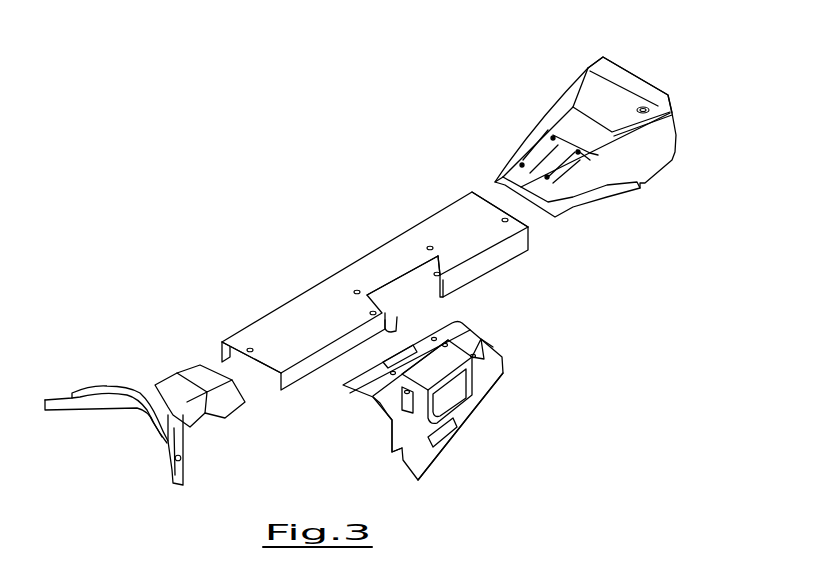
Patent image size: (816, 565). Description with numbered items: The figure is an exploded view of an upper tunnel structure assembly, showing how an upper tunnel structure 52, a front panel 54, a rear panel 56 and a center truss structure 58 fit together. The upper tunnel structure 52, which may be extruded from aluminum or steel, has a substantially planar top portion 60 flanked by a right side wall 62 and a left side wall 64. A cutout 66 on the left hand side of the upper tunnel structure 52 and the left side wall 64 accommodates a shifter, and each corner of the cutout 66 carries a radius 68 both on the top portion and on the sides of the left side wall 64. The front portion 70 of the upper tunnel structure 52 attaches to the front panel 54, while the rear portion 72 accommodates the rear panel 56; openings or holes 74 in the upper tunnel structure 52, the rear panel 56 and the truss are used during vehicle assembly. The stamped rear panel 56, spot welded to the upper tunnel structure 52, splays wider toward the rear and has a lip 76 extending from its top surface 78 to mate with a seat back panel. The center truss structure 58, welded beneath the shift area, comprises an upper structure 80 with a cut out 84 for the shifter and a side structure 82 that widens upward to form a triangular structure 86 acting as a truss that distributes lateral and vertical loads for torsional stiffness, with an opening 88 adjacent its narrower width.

The upper tunnel structure 52 is at (386, 286).
The front panel 54 is at (154, 378).
The rear panel 56 is at (586, 113).
The center truss structure 58 is at (459, 409).
The top portion 60 is at (383, 275).
The right side wall 62 is at (221, 349).
The left side wall 64 is at (303, 379).
The cutout 66 is at (412, 292).
The radius 68 is at (437, 273).
The front portion 70 is at (253, 328).
The rear portion 72 is at (500, 228).
The openings or holes 74 is at (648, 108).
The lip 76 is at (628, 78).
The top surface 78 is at (602, 89).
The upper structure 80 is at (372, 390).
The side structure 82 is at (470, 415).
The cut out 84 is at (455, 363).
The triangular structure 86 is at (470, 451).
The opening 88 is at (437, 442).